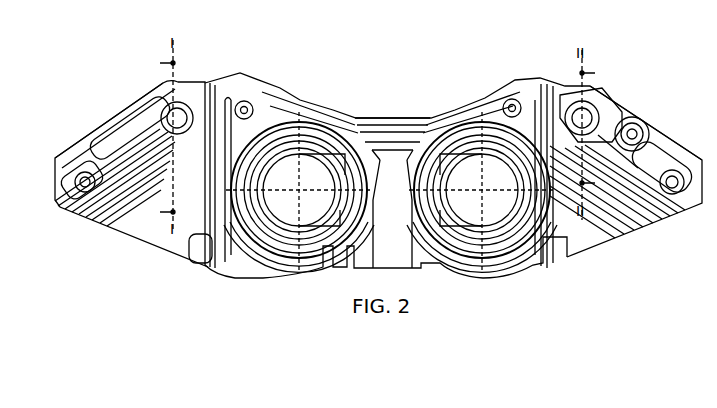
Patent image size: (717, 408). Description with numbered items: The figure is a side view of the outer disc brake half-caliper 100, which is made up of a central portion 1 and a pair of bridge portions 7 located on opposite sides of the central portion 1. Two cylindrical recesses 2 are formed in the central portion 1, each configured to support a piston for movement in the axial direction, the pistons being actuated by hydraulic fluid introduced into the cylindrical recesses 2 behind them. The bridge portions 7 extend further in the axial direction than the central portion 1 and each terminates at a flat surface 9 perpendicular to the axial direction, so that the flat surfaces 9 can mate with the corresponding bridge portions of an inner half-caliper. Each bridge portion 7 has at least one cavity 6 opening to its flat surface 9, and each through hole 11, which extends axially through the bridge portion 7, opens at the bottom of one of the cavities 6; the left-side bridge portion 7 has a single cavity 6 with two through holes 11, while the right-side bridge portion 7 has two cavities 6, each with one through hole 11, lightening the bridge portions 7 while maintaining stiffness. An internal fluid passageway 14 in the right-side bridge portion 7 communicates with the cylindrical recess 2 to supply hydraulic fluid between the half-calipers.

The central portion 1 is at (377, 118).
The cylindrical recess 2 is at (278, 132).
The cavity 6 is at (140, 118).
The bridge portion 7 is at (104, 114).
The flat surface 9 is at (90, 140).
The through hole 11 is at (173, 118).
The internal fluid passageway 14 is at (632, 134).
The outer disc brake half-caliper 100 is at (138, 256).